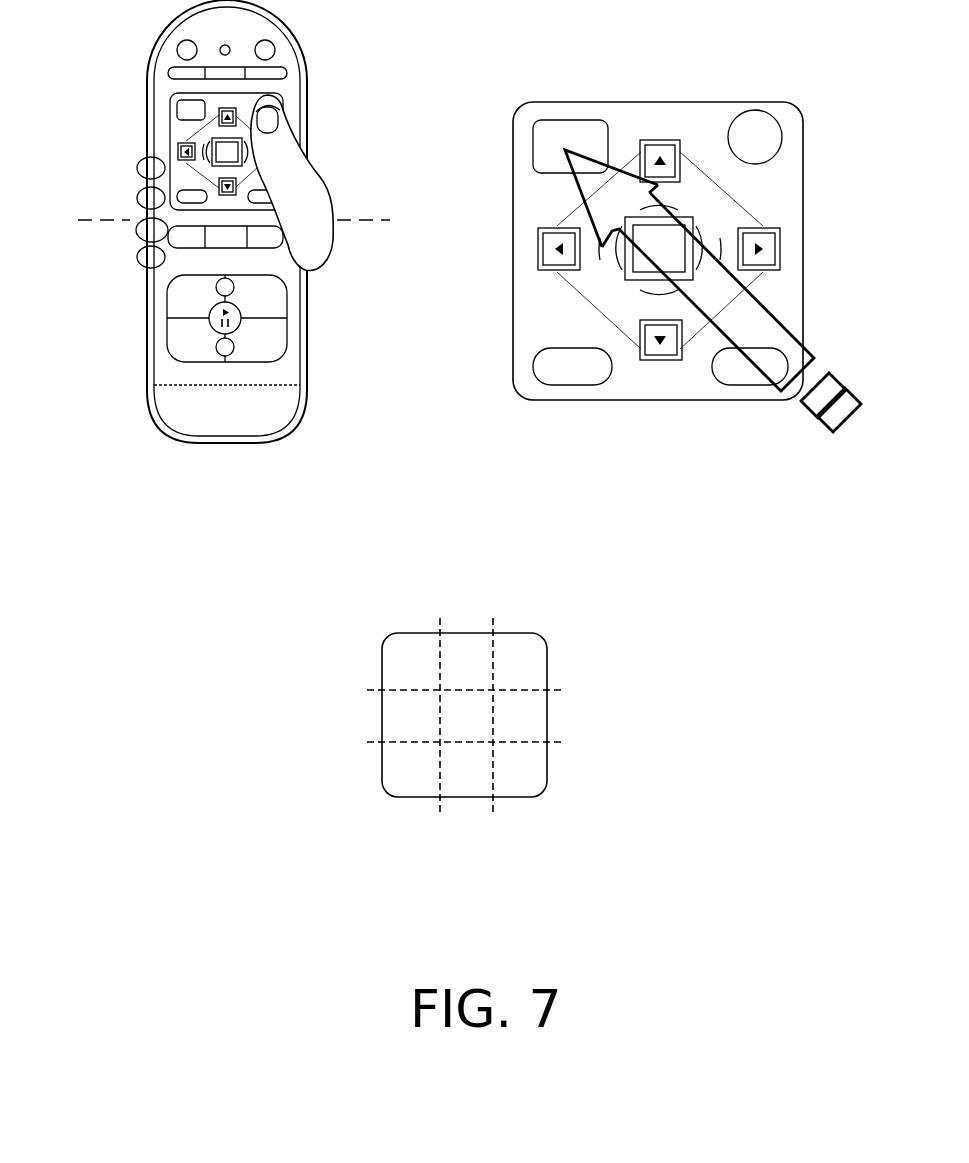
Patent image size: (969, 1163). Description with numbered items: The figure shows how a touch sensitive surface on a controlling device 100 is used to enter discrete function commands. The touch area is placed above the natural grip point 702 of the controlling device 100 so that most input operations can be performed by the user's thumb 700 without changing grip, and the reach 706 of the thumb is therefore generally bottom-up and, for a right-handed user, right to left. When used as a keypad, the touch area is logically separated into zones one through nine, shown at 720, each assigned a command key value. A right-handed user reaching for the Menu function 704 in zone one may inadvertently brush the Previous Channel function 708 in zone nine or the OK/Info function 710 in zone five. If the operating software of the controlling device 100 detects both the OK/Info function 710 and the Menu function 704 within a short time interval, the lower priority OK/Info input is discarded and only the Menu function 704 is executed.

The controlling device 100 is at (189, 250).
The user's thumb 700 is at (316, 172).
The natural grip point 702 is at (350, 222).
The Menu function 704 is at (550, 148).
The reach of the user's thumb 706 is at (846, 428).
The Previous Channel function 708 is at (727, 378).
The OK/Info function 710 is at (633, 262).
The zones 720 is at (555, 620).